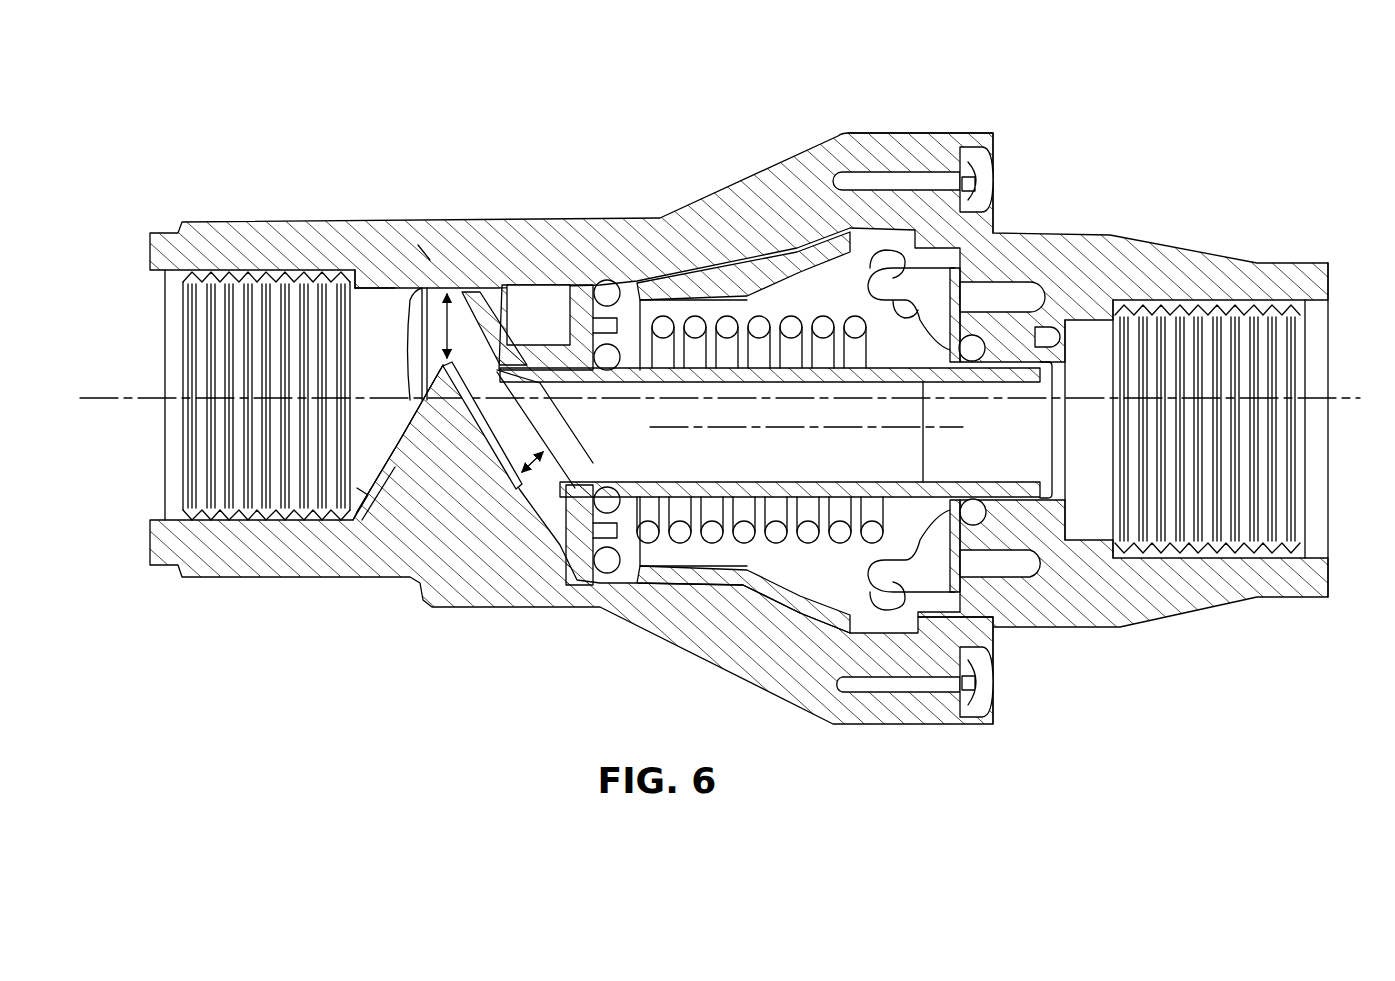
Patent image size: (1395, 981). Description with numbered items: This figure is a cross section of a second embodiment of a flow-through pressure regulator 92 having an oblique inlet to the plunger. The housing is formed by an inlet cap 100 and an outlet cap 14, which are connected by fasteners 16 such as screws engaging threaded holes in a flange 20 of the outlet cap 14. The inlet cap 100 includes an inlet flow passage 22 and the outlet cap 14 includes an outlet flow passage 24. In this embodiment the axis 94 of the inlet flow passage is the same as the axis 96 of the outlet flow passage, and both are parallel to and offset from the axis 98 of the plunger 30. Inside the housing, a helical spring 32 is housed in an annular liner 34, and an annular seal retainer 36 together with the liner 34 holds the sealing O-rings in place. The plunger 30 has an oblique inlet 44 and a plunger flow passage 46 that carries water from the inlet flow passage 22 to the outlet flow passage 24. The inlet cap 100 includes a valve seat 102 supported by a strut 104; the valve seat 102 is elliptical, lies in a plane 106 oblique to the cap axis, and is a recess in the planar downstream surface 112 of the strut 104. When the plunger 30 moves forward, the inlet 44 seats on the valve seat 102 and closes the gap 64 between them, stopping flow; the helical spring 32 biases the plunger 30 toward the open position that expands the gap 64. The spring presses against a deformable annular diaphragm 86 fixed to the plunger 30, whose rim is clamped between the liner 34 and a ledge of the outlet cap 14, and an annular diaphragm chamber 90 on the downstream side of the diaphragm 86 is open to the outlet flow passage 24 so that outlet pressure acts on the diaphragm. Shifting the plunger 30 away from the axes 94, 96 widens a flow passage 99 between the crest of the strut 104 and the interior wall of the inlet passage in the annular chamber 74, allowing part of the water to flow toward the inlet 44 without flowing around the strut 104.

The outlet cap 14 is at (1152, 245).
The fasteners 16 is at (975, 178).
The flange 20 is at (965, 132).
The inlet flow passage 22 is at (170, 450).
The outlet flow passage 24 is at (1330, 545).
The plunger 30 is at (990, 565).
The helical spring 32 is at (690, 545).
The annular liner 34 is at (650, 570).
The annular seal retainer 36 is at (541, 345).
The oblique inlet 44 is at (503, 422).
The plunger flow passage 46 is at (720, 465).
The gap 64 is at (517, 490).
The annular chamber 74 is at (385, 340).
The deformable annular diaphragm 86 is at (955, 290).
The annular diaphragm chamber 90 is at (980, 590).
The flow-through pressure regulator 92 is at (925, 100).
The axis of the inlet flow passage 94 is at (80, 398).
The axis of the outlet flow passage 96 is at (1335, 398).
The axis of the plunger 98 is at (935, 430).
The flow passage 99 is at (490, 302).
The inlet cap 100 is at (418, 245).
The valve seat 102 is at (500, 468).
The strut 104 is at (437, 470).
The plane 106 is at (413, 303).
The downstream surface 112 is at (540, 475).